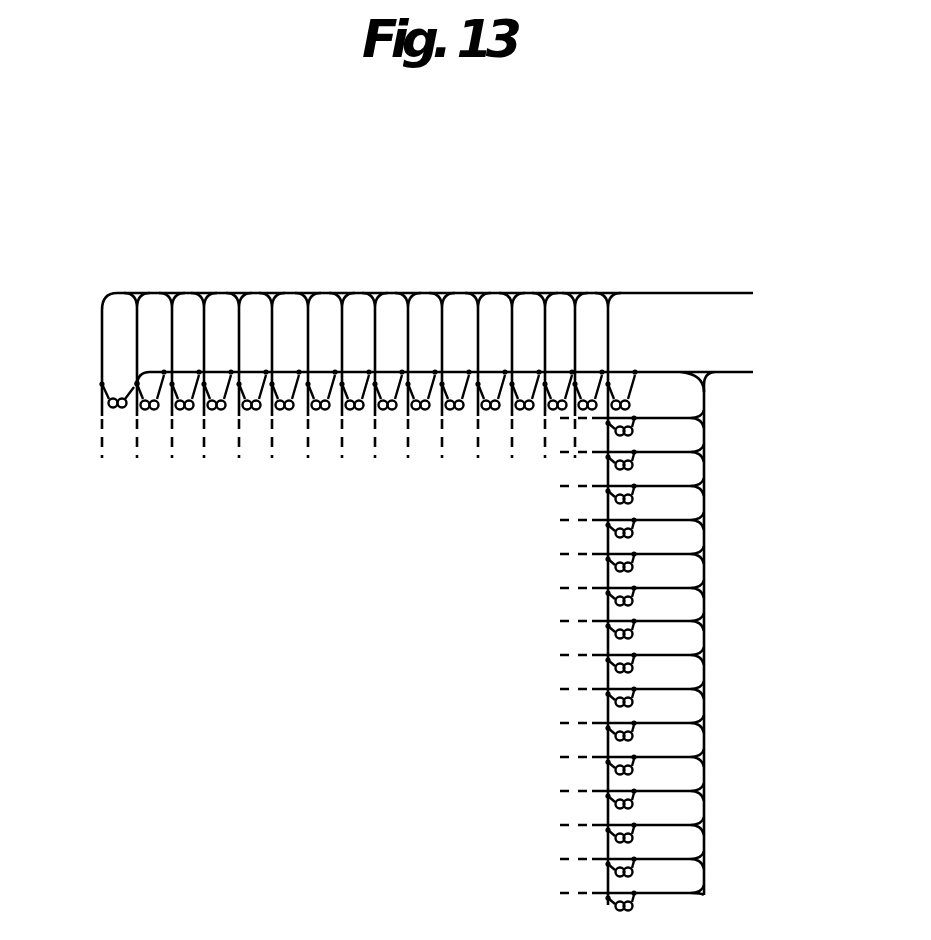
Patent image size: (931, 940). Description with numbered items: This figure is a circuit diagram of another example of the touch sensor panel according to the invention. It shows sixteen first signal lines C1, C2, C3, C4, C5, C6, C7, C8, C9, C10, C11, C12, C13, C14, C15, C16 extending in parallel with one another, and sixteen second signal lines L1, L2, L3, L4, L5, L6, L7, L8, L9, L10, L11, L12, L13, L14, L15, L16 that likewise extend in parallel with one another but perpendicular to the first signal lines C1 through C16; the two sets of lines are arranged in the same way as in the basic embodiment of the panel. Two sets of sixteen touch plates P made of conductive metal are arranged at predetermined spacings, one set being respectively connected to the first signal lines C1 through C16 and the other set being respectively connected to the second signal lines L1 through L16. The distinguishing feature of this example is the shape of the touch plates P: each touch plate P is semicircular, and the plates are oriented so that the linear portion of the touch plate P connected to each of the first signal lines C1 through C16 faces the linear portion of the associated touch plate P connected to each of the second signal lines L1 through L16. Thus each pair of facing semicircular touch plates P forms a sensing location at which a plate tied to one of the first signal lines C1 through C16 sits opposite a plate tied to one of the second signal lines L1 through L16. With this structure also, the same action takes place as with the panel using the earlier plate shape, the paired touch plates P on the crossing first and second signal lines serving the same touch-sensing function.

The first signal line C1 is at (604, 292).
The first signal line C2 is at (572, 292).
The first signal line C3 is at (541, 292).
The first signal line C4 is at (509, 292).
The first signal line C5 is at (474, 292).
The first signal line C6 is at (439, 292).
The first signal line C7 is at (404, 292).
The first signal line C8 is at (372, 292).
The first signal line C9 is at (338, 292).
The first signal line C10 is at (305, 292).
The first signal line C11 is at (268, 292).
The first signal line C12 is at (236, 292).
The first signal line C13 is at (200, 292).
The first signal line C14 is at (169, 292).
The first signal line C15 is at (133, 292).
The first signal line C16 is at (101, 308).
The second signal line L1 is at (704, 395).
The second signal line L2 is at (704, 424).
The second signal line L3 is at (704, 458).
The second signal line L4 is at (704, 492).
The second signal line L5 is at (704, 526).
The second signal line L6 is at (704, 560).
The second signal line L7 is at (704, 594).
The second signal line L8 is at (704, 627).
The second signal line L9 is at (704, 661).
The second signal line L10 is at (704, 695).
The second signal line L11 is at (704, 729).
The second signal line L12 is at (704, 763).
The second signal line L13 is at (704, 797).
The second signal line L14 is at (704, 831).
The second signal line L15 is at (704, 865).
The second signal line L16 is at (704, 895).
The touch plate P is at (107, 410).